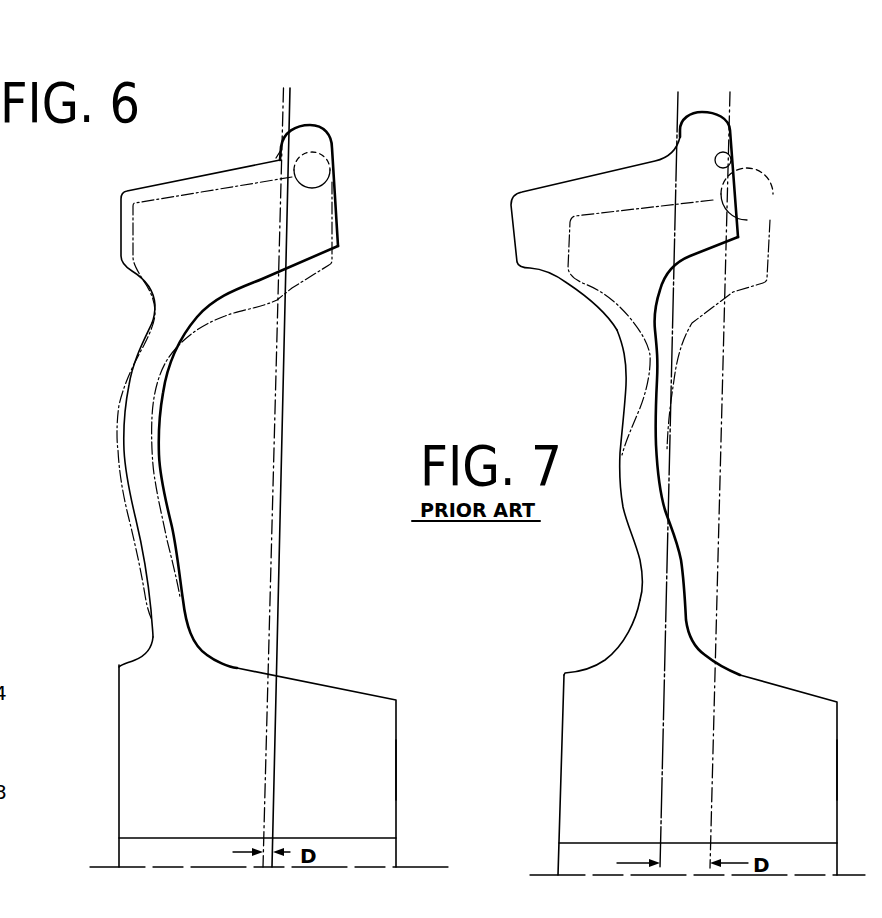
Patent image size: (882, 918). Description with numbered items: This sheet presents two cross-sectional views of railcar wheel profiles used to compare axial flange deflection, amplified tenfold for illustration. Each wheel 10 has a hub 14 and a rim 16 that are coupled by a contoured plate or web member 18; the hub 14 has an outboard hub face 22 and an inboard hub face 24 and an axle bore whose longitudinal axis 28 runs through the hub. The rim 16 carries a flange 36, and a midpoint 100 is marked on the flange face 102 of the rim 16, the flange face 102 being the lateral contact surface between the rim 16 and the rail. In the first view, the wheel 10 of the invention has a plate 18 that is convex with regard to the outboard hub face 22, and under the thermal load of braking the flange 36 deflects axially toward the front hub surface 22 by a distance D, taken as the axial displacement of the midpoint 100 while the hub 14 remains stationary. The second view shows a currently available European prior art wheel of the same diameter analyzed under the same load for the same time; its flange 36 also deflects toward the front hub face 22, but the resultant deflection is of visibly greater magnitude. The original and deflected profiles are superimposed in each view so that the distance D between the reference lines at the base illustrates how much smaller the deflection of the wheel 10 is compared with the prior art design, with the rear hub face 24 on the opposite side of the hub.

In FIG. 6, the wheel 10 is at (410, 325).
In FIG. 7, the wheel 10 is at (860, 325).
In FIG. 6, the hub 14 is at (382, 733).
In FIG. 7, the hub 14 is at (801, 709).
In FIG. 6, the rim 16 is at (149, 186).
In FIG. 7, the rim 16 is at (545, 196).
In FIG. 6, the plate 18 is at (113, 374).
In FIG. 7, the plate 18 is at (613, 409).
In FIG. 6, the outboard hub face 22 is at (118, 713).
In FIG. 7, the outboard hub face 22 is at (562, 743).
In FIG. 6, the inboard hub face 24 is at (397, 777).
In FIG. 7, the inboard hub face 24 is at (838, 767).
In FIG. 6, the longitudinal axis 28 is at (422, 867).
In FIG. 7, the longitudinal axis 28 is at (543, 873).
In FIG. 6, the flange 36 is at (318, 129).
In FIG. 7, the flange 36 is at (708, 90).
In FIG. 6, the midpoint 100 is at (282, 144).
In FIG. 7, the midpoint 100 is at (678, 133).
In FIG. 6, the flange face 102 is at (278, 157).
In FIG. 7, the flange face 102 is at (730, 152).